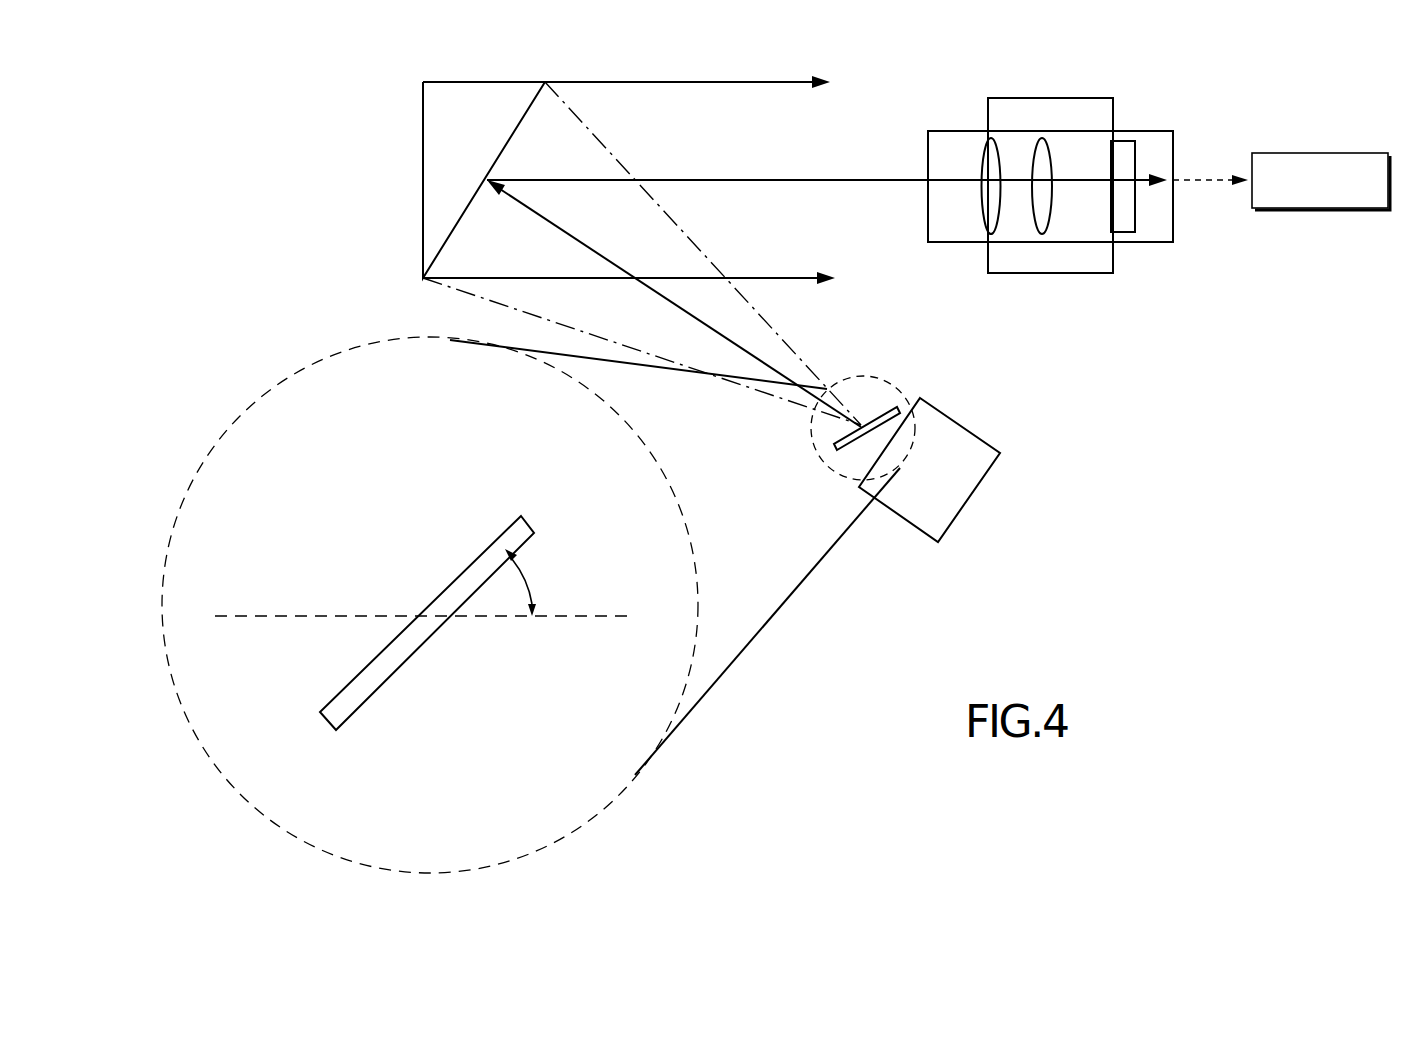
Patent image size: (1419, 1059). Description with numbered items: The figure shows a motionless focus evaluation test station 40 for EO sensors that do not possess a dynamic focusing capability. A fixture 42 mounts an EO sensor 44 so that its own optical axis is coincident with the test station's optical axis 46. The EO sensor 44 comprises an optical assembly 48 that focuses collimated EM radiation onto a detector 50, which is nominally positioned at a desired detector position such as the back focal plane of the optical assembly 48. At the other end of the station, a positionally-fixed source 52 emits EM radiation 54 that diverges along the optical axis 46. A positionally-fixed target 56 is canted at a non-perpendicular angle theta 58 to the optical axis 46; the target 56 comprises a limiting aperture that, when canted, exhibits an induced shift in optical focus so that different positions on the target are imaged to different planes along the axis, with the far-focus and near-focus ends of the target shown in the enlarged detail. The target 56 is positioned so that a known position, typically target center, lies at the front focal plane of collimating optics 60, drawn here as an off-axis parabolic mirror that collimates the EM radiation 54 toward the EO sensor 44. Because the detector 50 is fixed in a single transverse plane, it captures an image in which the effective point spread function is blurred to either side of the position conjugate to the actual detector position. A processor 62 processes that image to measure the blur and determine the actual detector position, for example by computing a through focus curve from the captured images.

The motionless focus evaluation test station 40 is at (1186, 473).
The fixture 42 is at (1097, 274).
The EO sensor 44 is at (1165, 117).
The optical axis 46 is at (594, 226).
The optical assembly 48 is at (1032, 183).
The detector 50 is at (1136, 178).
The positionally-fixed source 52 is at (970, 427).
The EM radiation 54 is at (806, 335).
The positionally-fixed target 56 is at (816, 437).
The non-perpendicular angle theta 58 is at (548, 574).
The collimating optics 60 is at (407, 168).
The processor 62 is at (1340, 153).